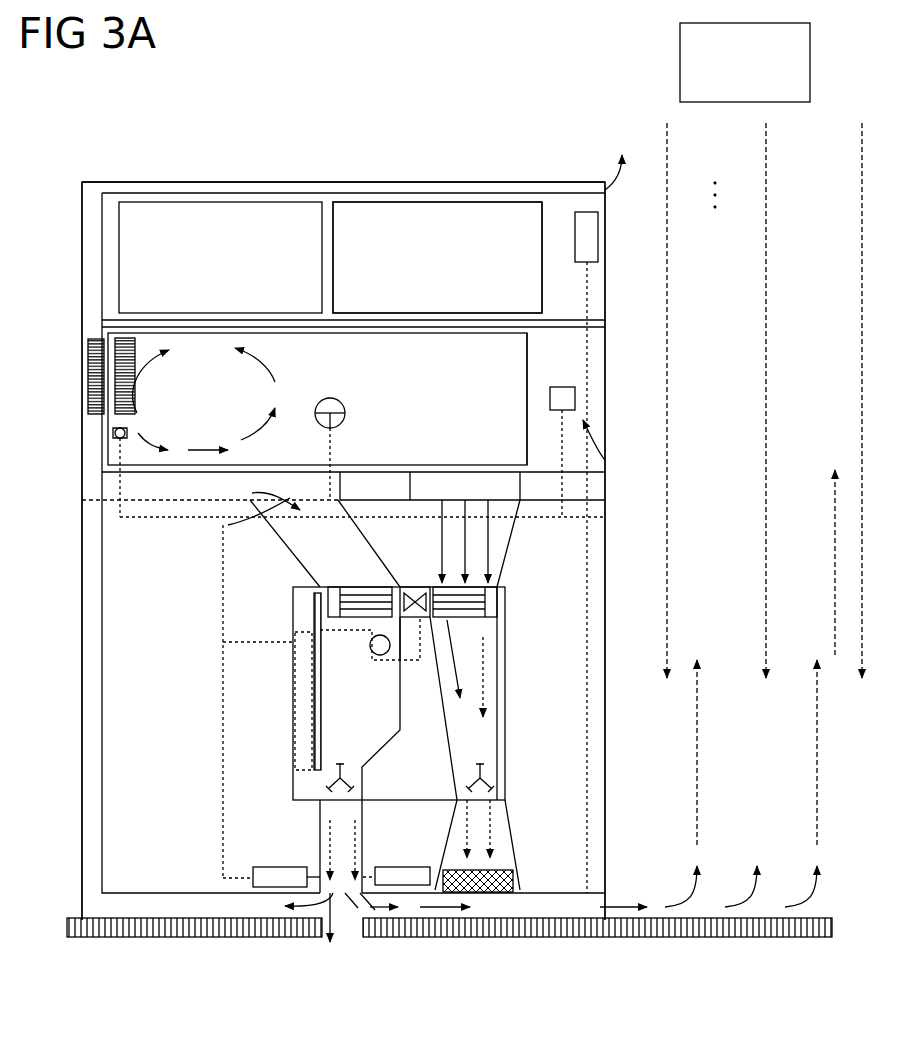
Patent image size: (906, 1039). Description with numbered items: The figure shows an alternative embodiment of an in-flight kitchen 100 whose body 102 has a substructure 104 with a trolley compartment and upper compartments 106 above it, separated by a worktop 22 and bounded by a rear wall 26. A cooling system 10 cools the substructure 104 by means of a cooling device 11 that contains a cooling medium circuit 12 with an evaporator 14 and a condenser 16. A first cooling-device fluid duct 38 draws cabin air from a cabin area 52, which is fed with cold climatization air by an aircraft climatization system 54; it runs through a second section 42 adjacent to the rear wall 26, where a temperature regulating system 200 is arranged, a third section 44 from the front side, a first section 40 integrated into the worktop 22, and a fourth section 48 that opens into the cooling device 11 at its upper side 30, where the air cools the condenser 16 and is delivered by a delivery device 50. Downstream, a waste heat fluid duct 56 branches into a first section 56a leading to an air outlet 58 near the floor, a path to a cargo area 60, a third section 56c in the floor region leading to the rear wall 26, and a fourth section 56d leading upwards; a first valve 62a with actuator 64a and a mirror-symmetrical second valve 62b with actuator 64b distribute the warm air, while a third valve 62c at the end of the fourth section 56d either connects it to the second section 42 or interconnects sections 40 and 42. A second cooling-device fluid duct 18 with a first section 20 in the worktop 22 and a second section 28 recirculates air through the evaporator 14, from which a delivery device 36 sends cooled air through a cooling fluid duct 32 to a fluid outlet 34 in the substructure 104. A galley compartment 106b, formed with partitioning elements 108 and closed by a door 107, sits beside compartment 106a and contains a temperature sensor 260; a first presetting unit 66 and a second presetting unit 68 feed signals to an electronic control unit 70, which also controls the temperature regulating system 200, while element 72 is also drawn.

The cooling system 10 is at (592, 605).
The cooling device 11 is at (510, 688).
The cooling medium circuit 12 is at (405, 665).
The evaporator 14 is at (500, 605).
The condenser 16 is at (355, 592).
The second cooling-device fluid duct 18 is at (520, 570).
The first section of the second cooling-device fluid duct 20 is at (473, 495).
The worktop 22 is at (600, 495).
The rear wall 26 is at (80, 688).
The second section of the second cooling-device fluid duct 28 is at (520, 552).
The upper side of the cooling device 30 is at (415, 592).
The cooling fluid duct 32 is at (512, 840).
The fluid outlet 34 is at (510, 888).
The delivery device 36 is at (490, 775).
The first cooling-device fluid duct 38 is at (245, 555).
The first section of the first cooling-device fluid duct 40 is at (165, 502).
The second section of the first cooling-device fluid duct 42 is at (88, 244).
The third section of the first cooling-device fluid duct 44 is at (212, 186).
The fourth section of the first cooling-device fluid duct 48 is at (292, 560).
The delivery device 50 is at (340, 768).
The cabin area 52 is at (750, 330).
The aircraft climatization system 54 is at (680, 60).
The waste heat fluid duct 56 is at (365, 810).
The first section of the waste heat fluid duct 56a is at (512, 922).
The third section of the waste heat fluid duct 56c is at (168, 922).
The fourth section of the waste heat fluid duct 56d is at (88, 588).
The air outlet 58 is at (605, 900).
The cargo area 60 is at (760, 975).
The first valve 62a is at (396, 922).
The second valve 62b is at (280, 922).
The third valve 62c is at (82, 500).
The first actuator 64a is at (398, 866).
The second actuator 64b is at (285, 866).
The first presetting unit 66 is at (575, 400).
The second presetting unit 68 is at (598, 240).
The electronic control unit 70 is at (312, 740).
The cooling element 72 is at (295, 676).
The in-flight kitchen 100 is at (413, 128).
The body 102 is at (343, 181).
The substructure 104 is at (606, 752).
The upper compartments 106 is at (606, 305).
The storage compartment 106a is at (530, 235).
The galley compartment 106b is at (523, 358).
The door 107 is at (527, 370).
The partitioning elements 108 is at (545, 318).
The temperature regulating system 200 is at (76, 387).
The temperature sensor 260 is at (347, 420).